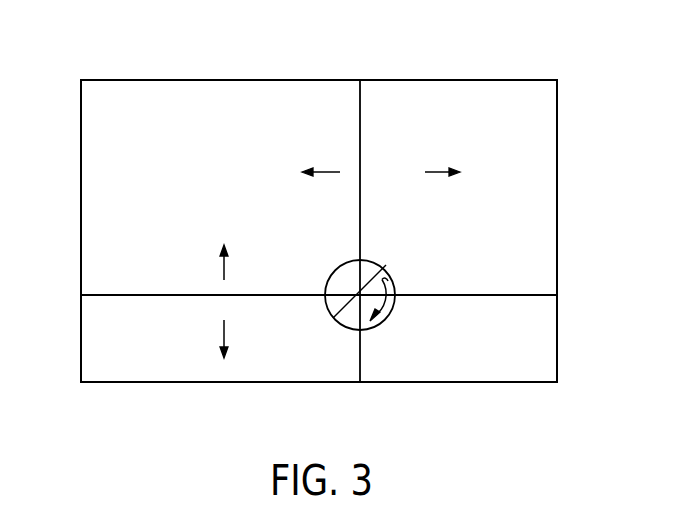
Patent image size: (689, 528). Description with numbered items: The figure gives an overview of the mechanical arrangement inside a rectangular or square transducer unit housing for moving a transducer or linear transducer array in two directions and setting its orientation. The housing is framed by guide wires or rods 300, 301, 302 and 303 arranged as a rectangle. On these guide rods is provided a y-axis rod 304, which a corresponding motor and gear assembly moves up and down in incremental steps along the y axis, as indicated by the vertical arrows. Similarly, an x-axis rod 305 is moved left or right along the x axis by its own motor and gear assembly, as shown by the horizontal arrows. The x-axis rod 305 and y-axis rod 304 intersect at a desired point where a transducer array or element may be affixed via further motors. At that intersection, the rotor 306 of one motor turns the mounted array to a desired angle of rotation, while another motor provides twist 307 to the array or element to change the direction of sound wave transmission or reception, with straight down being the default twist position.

The guide wire or rod 300 is at (81, 213).
The guide wire or rod 301 is at (283, 80).
The guide wire or rod 302 is at (557, 190).
The guide wire or rod 303 is at (322, 382).
The y-axis rod 304 is at (248, 295).
The x-axis rod 305 is at (360, 208).
The rotor 306 is at (386, 265).
The twist 307 is at (345, 308).